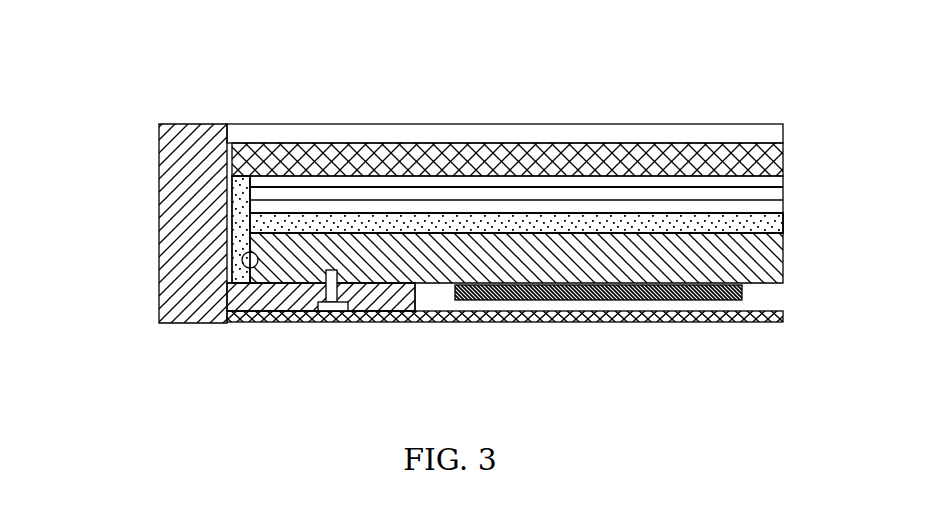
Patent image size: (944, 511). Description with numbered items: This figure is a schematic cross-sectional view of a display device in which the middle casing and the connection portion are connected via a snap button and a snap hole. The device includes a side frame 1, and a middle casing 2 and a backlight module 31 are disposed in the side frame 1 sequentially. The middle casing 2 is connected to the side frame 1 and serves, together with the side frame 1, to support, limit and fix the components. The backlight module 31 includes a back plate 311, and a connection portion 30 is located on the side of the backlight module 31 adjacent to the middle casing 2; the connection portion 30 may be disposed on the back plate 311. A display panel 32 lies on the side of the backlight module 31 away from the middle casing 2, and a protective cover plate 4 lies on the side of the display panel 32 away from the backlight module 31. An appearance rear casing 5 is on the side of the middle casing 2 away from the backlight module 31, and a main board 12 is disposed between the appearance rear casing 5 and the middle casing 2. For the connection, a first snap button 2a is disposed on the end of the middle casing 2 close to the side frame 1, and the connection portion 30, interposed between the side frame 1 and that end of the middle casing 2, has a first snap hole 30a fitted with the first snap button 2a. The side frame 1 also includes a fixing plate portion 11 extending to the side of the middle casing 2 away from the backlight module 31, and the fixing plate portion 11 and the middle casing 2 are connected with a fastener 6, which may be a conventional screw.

The side frame 1 is at (180, 233).
The fixing plate portion 11 is at (390, 300).
The middle casing 2 is at (783, 262).
The first snap button 2a is at (240, 270).
The protective cover plate 4 is at (500, 136).
The appearance rear casing 5 is at (763, 325).
The fastener 6 is at (336, 306).
The main board 12 is at (582, 302).
The connection portion 30 is at (238, 258).
The first snap hole 30a is at (241, 229).
The backlight module 31 is at (789, 177).
The back plate 311 is at (683, 230).
The display panel 32 is at (775, 152).